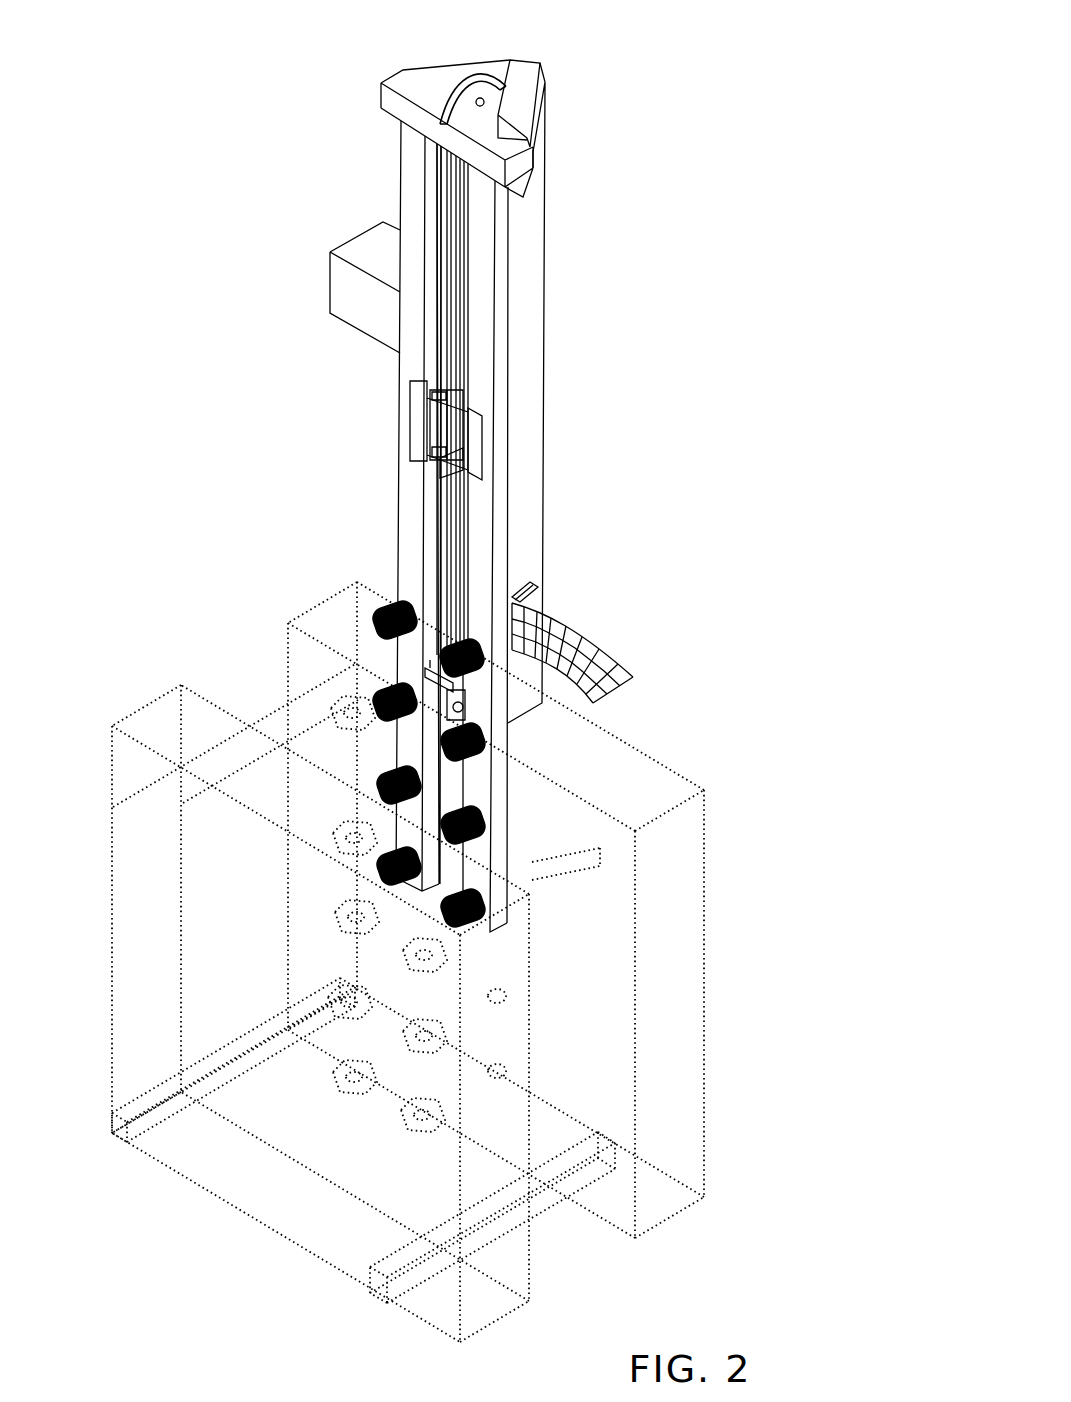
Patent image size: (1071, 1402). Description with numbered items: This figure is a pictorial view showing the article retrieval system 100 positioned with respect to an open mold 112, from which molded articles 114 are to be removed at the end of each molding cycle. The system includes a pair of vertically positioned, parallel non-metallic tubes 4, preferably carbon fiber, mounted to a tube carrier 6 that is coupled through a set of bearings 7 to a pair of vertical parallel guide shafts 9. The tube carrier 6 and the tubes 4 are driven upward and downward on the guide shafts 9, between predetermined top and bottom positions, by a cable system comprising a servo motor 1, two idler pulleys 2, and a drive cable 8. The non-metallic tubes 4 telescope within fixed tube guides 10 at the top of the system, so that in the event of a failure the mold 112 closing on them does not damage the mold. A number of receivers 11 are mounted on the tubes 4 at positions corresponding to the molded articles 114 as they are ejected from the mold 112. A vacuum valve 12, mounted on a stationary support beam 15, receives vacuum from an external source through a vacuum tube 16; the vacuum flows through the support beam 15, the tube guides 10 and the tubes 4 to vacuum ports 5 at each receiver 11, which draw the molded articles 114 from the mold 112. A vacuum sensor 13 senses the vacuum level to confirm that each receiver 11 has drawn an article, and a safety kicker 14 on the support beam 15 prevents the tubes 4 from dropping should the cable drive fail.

The servo motor 1 is at (330, 252).
The idler pulleys 2 is at (465, 75).
The non-metallic tubes 4 is at (400, 548).
The vacuum ports 5 is at (482, 806).
The tube carrier 6 is at (430, 447).
The bearings 7 is at (430, 397).
The drive cable 8 is at (445, 460).
The guide shafts 9 is at (440, 192).
The fixed tube guides 10 is at (400, 143).
The receivers 11 is at (378, 617).
The vacuum valve 12 is at (542, 580).
The vacuum sensor 13 is at (543, 63).
The safety kicker 14 is at (513, 173).
The stationary support beam 15 is at (546, 446).
The vacuum tube 16 is at (600, 645).
The article retrieval system 100 is at (632, 442).
The mold 112 is at (474, 962).
The molded articles 114 is at (341, 914).